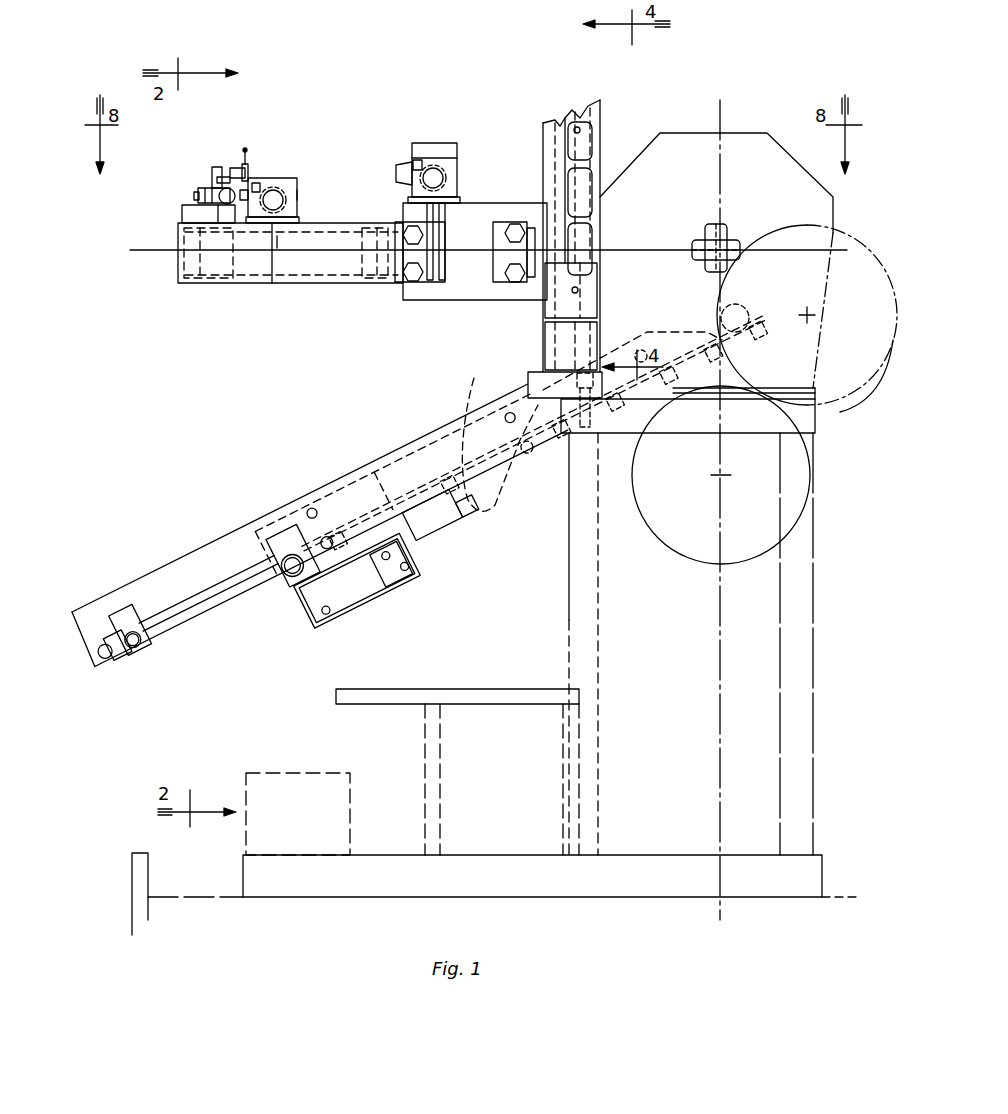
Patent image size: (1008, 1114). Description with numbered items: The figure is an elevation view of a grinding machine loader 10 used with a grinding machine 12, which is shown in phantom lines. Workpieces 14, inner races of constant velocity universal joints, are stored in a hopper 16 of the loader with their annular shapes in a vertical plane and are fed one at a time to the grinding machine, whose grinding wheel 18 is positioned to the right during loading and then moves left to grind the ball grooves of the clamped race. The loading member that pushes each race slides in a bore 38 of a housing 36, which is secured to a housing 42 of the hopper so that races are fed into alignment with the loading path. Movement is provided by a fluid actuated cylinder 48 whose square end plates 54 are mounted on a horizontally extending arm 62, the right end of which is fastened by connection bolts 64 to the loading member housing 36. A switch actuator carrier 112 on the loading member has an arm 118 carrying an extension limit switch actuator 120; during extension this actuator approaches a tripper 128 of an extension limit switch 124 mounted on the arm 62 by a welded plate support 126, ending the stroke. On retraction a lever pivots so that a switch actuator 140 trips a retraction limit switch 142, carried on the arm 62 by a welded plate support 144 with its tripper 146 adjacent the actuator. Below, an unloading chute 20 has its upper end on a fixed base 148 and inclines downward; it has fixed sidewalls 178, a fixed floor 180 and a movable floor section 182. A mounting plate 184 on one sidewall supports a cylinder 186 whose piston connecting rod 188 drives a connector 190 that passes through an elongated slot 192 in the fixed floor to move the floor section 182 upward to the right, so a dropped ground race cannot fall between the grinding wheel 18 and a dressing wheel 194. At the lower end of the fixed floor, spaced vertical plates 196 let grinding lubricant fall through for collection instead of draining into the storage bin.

The grinding machine loader 10 is at (480, 104).
The grinding machine 12 is at (760, 112).
The workpieces 14 is at (700, 236).
The hopper 16 is at (612, 158).
The grinding wheel 18 is at (822, 235).
The unloading chute 20 is at (420, 473).
The housing 36 is at (505, 203).
The bore 38 is at (200, 194).
The housing 42 is at (545, 178).
The fluid actuated cylinder 48 is at (255, 294).
The square end plates 54 is at (183, 288).
The arm 62 is at (313, 286).
The connection bolts 64 is at (413, 282).
The switch actuator carrier 112 is at (178, 228).
The arm 118 is at (212, 172).
The extension limit switch actuator 120 is at (246, 162).
The extension limit switch 124 is at (432, 143).
The welded plate support 126 is at (425, 207).
The tripper 128 is at (398, 172).
The switch actuator 140 is at (236, 168).
The retraction limit switch 142 is at (300, 195).
The welded plate support 144 is at (277, 243).
The tripper 146 is at (246, 190).
The fixed base 148 is at (560, 590).
The fixed sidewalls 178 is at (422, 445).
The fixed floor 180 is at (492, 509).
The movable floor section 182 is at (476, 400).
The mounting plate 184 is at (288, 580).
The cylinder 186 is at (370, 592).
The piston connecting rod 188 is at (450, 512).
The connector 190 is at (436, 524).
The elongated slot 192 is at (525, 456).
The dressing wheel 194 is at (806, 462).
The plates 196 is at (203, 610).